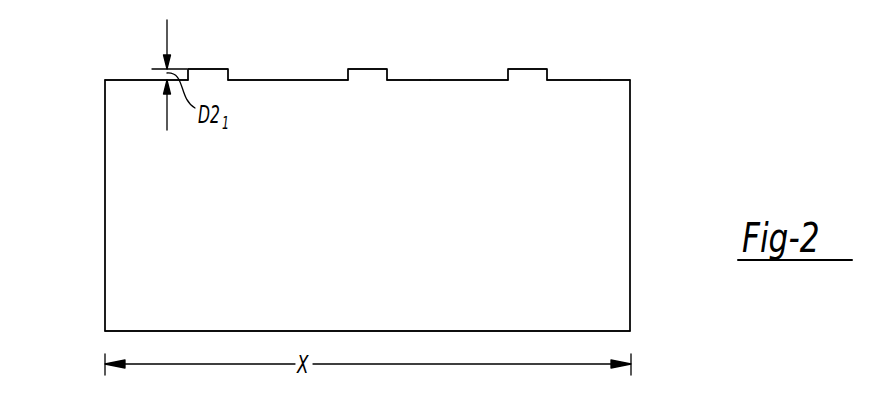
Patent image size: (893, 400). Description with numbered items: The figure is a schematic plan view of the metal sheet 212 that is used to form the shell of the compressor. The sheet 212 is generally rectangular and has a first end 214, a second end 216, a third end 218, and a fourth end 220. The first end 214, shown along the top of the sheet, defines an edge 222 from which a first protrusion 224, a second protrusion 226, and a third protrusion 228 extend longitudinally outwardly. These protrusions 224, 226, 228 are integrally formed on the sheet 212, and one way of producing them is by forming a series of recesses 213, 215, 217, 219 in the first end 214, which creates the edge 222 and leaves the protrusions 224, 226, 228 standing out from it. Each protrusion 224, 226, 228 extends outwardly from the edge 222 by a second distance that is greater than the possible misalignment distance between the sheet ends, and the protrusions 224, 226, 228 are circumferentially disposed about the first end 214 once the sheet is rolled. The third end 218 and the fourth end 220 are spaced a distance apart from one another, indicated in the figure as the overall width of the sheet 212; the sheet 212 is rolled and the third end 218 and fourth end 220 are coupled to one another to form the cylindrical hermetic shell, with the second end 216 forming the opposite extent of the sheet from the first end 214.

The metal sheet 212 is at (676, 112).
The recess 213 is at (577, 80).
The first end 214 is at (610, 80).
The recess 215 is at (417, 80).
The second end 216 is at (553, 332).
The recess 217 is at (303, 80).
The third end 218 is at (630, 170).
The recess 219 is at (117, 80).
The fourth end 220 is at (105, 160).
The edge 222 is at (462, 80).
The first protrusion 224 is at (528, 69).
The second protrusion 226 is at (360, 69).
The third protrusion 228 is at (205, 69).